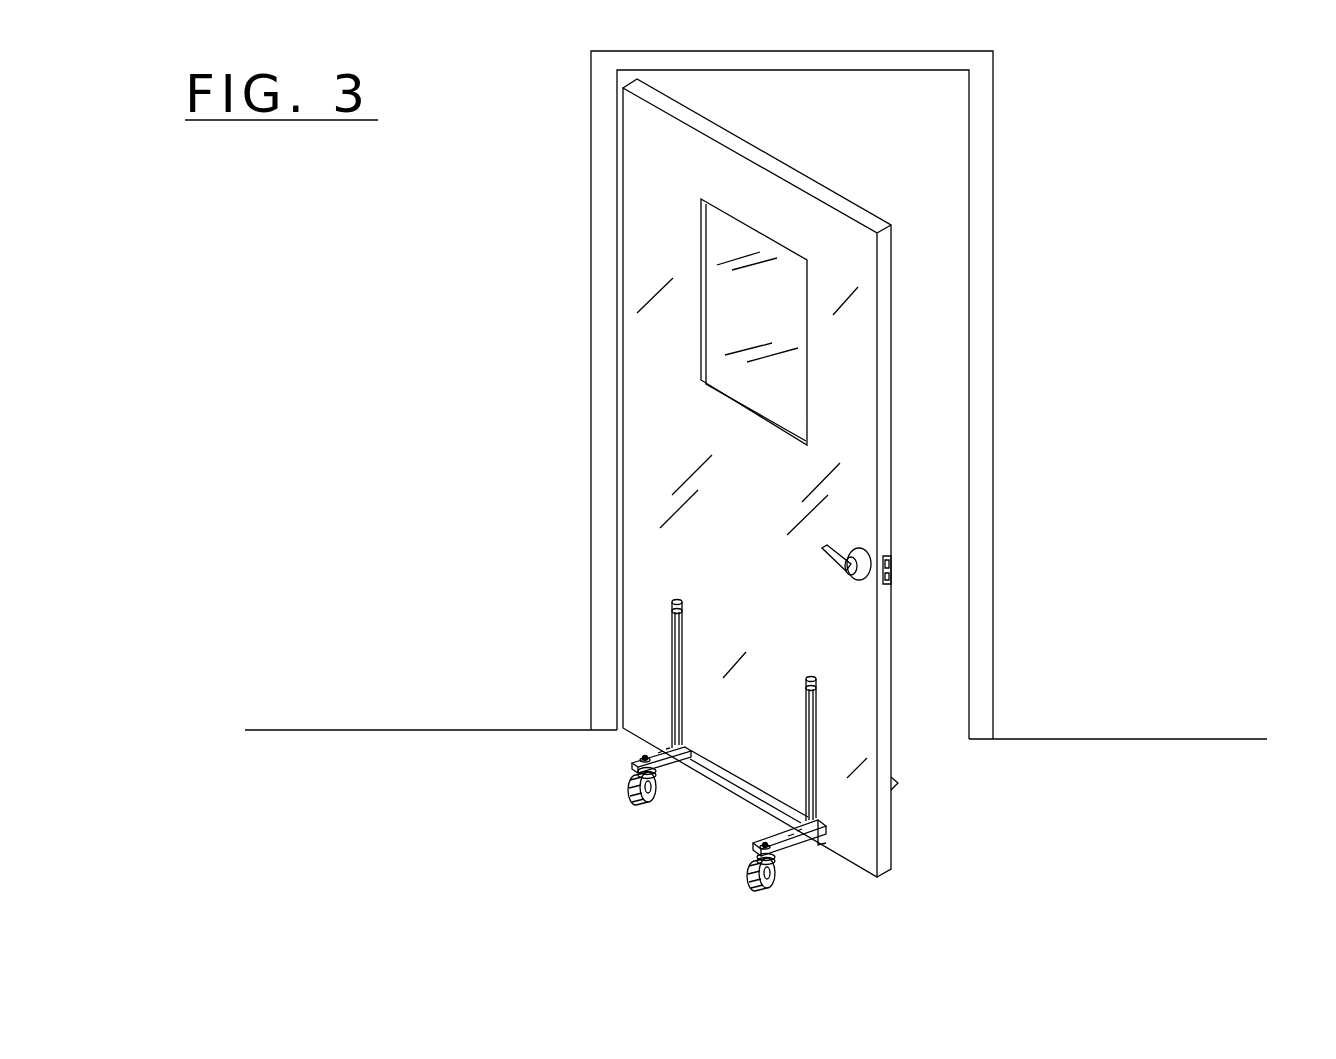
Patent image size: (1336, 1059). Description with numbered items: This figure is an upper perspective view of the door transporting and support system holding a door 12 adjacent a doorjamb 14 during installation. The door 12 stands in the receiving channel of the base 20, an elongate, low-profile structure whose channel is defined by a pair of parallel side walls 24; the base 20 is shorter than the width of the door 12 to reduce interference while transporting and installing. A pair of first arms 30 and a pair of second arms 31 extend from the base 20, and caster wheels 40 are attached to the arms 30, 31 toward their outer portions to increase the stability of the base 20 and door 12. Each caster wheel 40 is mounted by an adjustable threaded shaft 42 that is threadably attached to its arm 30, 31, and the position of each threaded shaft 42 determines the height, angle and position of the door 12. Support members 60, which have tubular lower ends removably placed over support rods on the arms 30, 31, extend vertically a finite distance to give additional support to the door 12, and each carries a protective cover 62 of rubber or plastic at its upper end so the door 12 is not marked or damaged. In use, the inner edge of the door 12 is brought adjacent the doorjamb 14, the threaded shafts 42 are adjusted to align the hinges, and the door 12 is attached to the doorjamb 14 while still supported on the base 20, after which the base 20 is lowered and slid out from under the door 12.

The door 12 is at (843, 350).
The doorjamb 14 is at (617, 183).
The base 20 is at (742, 803).
The side walls 24 is at (710, 786).
The first arms 30 is at (668, 748).
The second arms 31 is at (828, 848).
The caster wheels 40 is at (630, 783).
The threaded shaft 42 is at (645, 758).
The support members 60 is at (813, 716).
The protective cover 62 is at (812, 675).